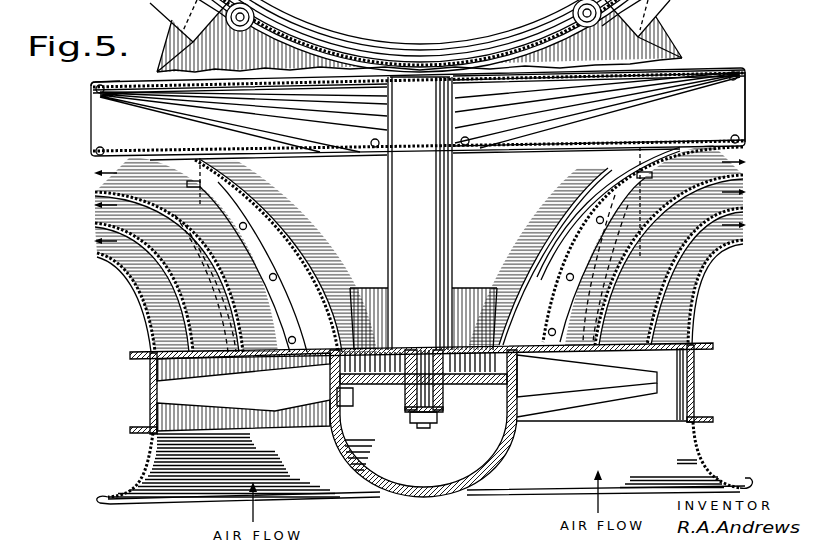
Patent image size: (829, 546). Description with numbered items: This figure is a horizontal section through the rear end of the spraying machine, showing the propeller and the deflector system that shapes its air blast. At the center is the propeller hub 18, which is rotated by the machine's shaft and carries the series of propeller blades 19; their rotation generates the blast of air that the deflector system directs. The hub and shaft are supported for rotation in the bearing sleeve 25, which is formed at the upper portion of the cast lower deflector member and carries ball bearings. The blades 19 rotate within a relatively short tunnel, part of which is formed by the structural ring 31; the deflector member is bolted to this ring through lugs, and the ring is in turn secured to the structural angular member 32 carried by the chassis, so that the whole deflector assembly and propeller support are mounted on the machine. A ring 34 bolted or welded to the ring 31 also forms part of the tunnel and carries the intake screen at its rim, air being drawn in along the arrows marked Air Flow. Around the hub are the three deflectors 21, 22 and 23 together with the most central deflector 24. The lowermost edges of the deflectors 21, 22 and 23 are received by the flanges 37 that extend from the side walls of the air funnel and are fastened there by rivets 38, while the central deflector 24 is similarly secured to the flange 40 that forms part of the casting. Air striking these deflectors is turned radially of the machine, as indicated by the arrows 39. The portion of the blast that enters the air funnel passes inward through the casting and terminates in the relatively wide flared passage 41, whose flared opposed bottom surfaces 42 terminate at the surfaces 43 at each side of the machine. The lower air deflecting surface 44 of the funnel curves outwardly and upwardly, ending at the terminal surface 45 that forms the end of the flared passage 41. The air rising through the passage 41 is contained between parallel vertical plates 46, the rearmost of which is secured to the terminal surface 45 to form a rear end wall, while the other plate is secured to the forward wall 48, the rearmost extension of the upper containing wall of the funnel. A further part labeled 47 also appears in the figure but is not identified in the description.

The propeller hub 18 is at (463, 382).
The propeller blades 19 is at (562, 395).
The deflector 21 is at (688, 318).
The deflector 22 is at (673, 273).
The deflector 23 is at (663, 223).
The central deflector 24 is at (553, 345).
The bearing sleeve 25 is at (442, 220).
The structural ring 31 is at (695, 378).
The structural angular member 32 is at (663, 41).
The ring 34 is at (697, 457).
The flanges 37 is at (272, 266).
The rivets 38 is at (244, 222).
The arrows 39 is at (92, 240).
The flange 40 is at (263, 220).
The flared passage 41 is at (650, 107).
The flared opposed bottom surfaces 42 is at (118, 124).
The terminal surface 43 is at (748, 118).
The lower air deflecting surface 44 is at (510, 105).
The terminal surface of lower deflecting surface 45 is at (533, 72).
The parallel vertical plates 46 is at (315, 87).
The housing corner 47 is at (92, 93).
The forward wall 48 is at (342, 153).